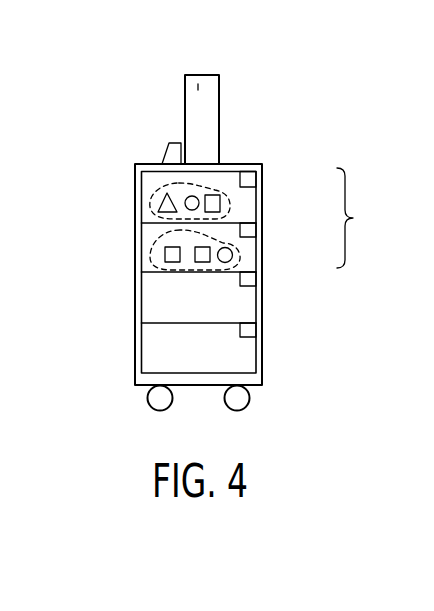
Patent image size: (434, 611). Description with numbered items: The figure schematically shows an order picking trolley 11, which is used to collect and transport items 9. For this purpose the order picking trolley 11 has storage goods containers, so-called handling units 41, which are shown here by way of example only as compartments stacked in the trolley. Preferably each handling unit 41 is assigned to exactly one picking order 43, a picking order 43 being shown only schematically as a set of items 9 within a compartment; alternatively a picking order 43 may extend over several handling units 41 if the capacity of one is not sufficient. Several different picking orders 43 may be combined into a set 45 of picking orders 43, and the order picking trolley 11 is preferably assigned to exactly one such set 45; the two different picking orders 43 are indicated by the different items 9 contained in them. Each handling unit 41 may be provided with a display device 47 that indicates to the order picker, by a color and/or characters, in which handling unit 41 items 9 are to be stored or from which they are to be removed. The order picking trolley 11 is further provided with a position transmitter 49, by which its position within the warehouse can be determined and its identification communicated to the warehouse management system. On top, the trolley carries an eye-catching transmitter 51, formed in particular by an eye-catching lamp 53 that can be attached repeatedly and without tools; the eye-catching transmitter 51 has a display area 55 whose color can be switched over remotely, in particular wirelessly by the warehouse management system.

The items 9 is at (242, 202).
The order picking trolley 11 is at (104, 191).
The handling unit 41 is at (153, 182).
The picking order 43 is at (215, 192).
The set of picking orders 45 is at (360, 218).
The display device 47 is at (250, 175).
The position transmitter 49 is at (177, 143).
The eye-catching transmitter 51 is at (233, 90).
The eye-catching lamp 53 is at (220, 75).
The display area 55 is at (198, 87).